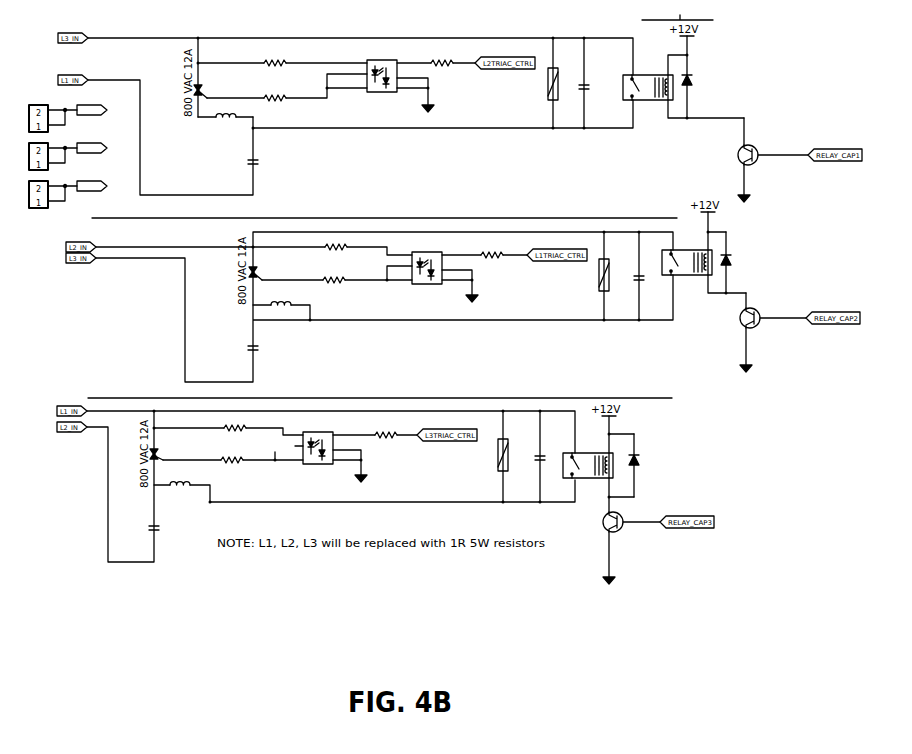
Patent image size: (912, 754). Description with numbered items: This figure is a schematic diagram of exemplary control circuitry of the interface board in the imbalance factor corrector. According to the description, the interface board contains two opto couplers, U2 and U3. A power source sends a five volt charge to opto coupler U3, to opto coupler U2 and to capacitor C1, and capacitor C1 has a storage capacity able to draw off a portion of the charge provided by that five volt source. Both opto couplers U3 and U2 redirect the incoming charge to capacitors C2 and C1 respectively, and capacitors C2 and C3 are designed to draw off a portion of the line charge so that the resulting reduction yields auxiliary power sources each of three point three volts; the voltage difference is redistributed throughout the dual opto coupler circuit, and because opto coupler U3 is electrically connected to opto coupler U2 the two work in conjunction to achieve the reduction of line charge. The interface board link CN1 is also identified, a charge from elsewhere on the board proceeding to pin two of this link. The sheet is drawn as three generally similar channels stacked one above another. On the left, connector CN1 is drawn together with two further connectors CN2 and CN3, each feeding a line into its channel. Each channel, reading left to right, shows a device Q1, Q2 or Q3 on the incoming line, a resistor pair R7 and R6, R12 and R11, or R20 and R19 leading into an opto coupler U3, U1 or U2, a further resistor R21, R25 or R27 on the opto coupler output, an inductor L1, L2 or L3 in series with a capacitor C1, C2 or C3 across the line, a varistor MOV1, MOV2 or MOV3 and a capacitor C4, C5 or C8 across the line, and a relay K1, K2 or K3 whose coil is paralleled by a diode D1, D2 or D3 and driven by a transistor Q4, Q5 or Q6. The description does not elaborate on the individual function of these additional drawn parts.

The interface board link CN1 is at (62, 118).
The input connector L2 CN2 is at (62, 156).
The input connector L3 CN3 is at (62, 194).
The triac Q1 is at (165, 453).
The triac Q2 is at (208, 90).
The triac Q3 is at (263, 273).
The relay driver transistor Q4 is at (631, 542).
The relay driver transistor Q5 is at (773, 160).
The relay driver transistor Q6 is at (773, 332).
The optocoupler triac driver U1 is at (382, 76).
The opto coupler U2 is at (426, 265).
The opto coupler U3 is at (317, 447).
The resistor 1K R6 is at (233, 462).
The resistor 1K R7 is at (228, 428).
The resistor 1K R11 is at (287, 94).
The resistor 1K R12 is at (282, 65).
The resistor 1K R19 is at (337, 280).
The resistor 1K R20 is at (254, 247).
The resistor 680R R21 is at (375, 437).
The resistor 680R R25 is at (436, 63).
The resistor 680R R27 is at (484, 255).
The inductor 68uH L1 is at (182, 486).
The inductor 68uH L2 is at (225, 118).
The inductor 68uH L3 is at (282, 306).
The capacitor C1 is at (157, 531).
The capacitor C2 is at (251, 163).
The capacitor C3 is at (255, 351).
The capacitor 0.01uF C4 is at (541, 457).
The capacitor 0.01uF C5 is at (589, 83).
The capacitor 0.01uF C8 is at (640, 276).
The metal oxide varistor MOV1 is at (502, 457).
The metal oxide varistor MOV2 is at (552, 83).
The metal oxide varistor MOV3 is at (603, 276).
The relay K1 is at (598, 464).
The relay K2 is at (683, 87).
The relay K3 is at (704, 255).
The diode D1 is at (628, 465).
The diode D2 is at (694, 77).
The diode D3 is at (733, 262).